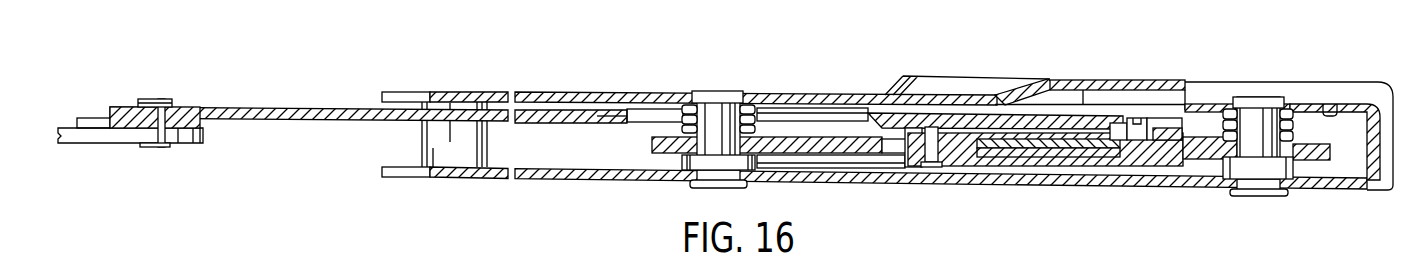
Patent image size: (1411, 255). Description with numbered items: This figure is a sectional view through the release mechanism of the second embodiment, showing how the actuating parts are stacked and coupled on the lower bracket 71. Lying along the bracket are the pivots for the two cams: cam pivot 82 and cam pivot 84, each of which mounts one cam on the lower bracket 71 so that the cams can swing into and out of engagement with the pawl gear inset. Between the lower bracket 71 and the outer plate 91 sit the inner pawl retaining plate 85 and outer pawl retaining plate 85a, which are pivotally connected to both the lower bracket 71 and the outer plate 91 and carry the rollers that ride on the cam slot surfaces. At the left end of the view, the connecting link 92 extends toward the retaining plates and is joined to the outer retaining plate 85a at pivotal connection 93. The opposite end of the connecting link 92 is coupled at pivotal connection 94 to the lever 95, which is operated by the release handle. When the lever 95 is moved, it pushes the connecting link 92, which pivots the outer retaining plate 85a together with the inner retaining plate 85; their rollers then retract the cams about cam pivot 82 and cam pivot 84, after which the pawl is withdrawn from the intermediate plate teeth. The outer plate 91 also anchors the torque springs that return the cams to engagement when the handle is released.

The lower bracket 71 is at (593, 178).
The cam pivot 82 is at (702, 185).
The cam pivot 84 is at (1257, 197).
The inner pawl retaining plate 85 is at (1013, 162).
The outer pawl retaining plate 85a is at (965, 137).
The outer plate 91 is at (587, 93).
The connecting link 92 is at (267, 107).
The pivotal connection 93 is at (1135, 127).
The pivotal connection 94 is at (165, 106).
The lever 95 is at (102, 137).